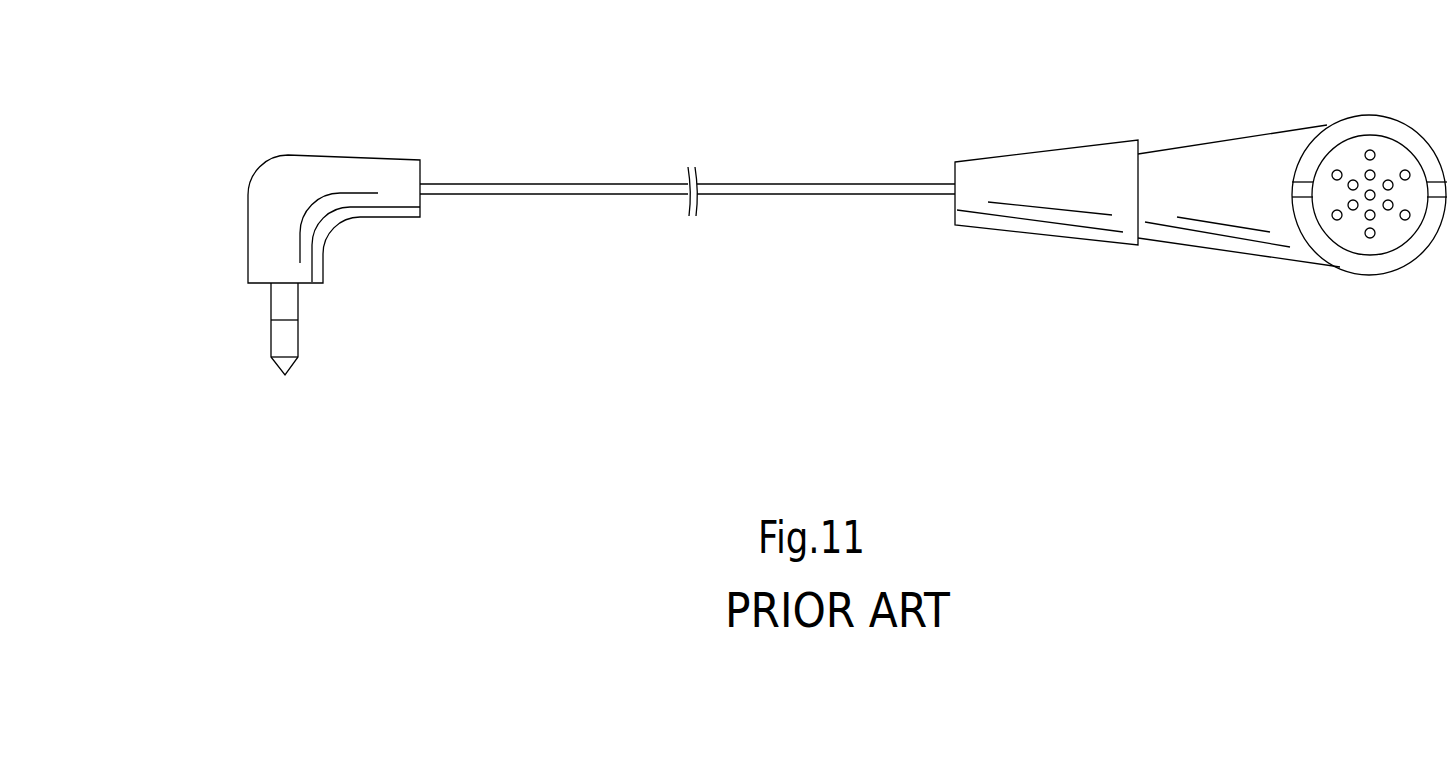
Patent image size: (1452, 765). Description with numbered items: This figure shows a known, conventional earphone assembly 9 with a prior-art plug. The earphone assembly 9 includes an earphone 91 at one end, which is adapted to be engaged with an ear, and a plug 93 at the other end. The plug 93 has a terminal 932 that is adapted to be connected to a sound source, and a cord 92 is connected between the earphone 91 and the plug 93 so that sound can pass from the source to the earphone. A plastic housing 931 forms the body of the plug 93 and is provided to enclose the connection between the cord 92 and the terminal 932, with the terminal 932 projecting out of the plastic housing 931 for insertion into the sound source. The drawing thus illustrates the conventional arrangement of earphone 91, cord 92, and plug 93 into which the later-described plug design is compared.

The earphone assembly 9 is at (781, 258).
The earphone 91 is at (1235, 172).
The cord 92 is at (568, 190).
The plug 93 is at (268, 207).
The plastic housing 931 is at (378, 176).
The terminal 932 is at (283, 333).